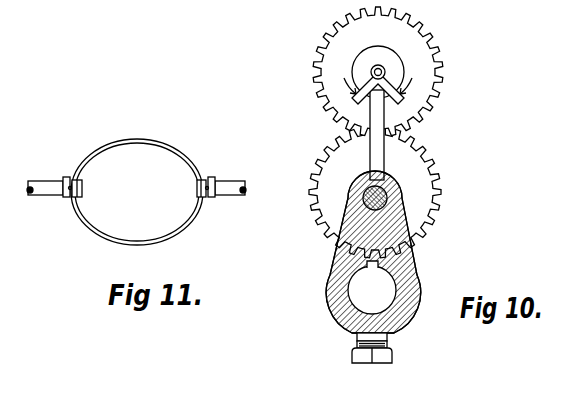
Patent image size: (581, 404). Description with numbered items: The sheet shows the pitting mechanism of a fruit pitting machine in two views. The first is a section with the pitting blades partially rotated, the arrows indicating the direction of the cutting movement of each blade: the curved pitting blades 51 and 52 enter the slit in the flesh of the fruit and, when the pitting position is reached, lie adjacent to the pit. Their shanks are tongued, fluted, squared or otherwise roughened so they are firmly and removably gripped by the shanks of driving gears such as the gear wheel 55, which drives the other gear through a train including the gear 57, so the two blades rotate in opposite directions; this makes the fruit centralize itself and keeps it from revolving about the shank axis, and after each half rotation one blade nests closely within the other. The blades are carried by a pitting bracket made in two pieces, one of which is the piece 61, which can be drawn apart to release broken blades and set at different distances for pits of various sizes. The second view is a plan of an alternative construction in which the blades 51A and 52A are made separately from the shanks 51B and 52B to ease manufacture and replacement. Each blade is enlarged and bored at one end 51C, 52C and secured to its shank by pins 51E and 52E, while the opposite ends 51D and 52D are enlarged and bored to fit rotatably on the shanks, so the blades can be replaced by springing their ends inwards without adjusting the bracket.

In FIG. 10, the pitting blade 51 is at (392, 80).
In FIG. 10, the pitting blade 52 is at (362, 88).
In FIG. 10, the driving gear 55 is at (426, 48).
In FIG. 10, the gear of train 57 is at (430, 182).
In FIG. 10, the pitting bracket piece 61 is at (412, 263).
In FIG. 11, the blade 51A is at (160, 142).
In FIG. 11, the shank 51B is at (232, 197).
In FIG. 11, the enlarged bored end 51C is at (196, 184).
In FIG. 11, the enlarged bored end 51D is at (82, 184).
In FIG. 11, the pin 51E is at (196, 194).
In FIG. 11, the blade 52A is at (174, 234).
In FIG. 11, the shank 52B is at (48, 188).
In FIG. 11, the enlarged bored end 52C is at (64, 196).
In FIG. 11, the enlarged bored end 52D is at (212, 178).
In FIG. 11, the pin 52E is at (71, 178).